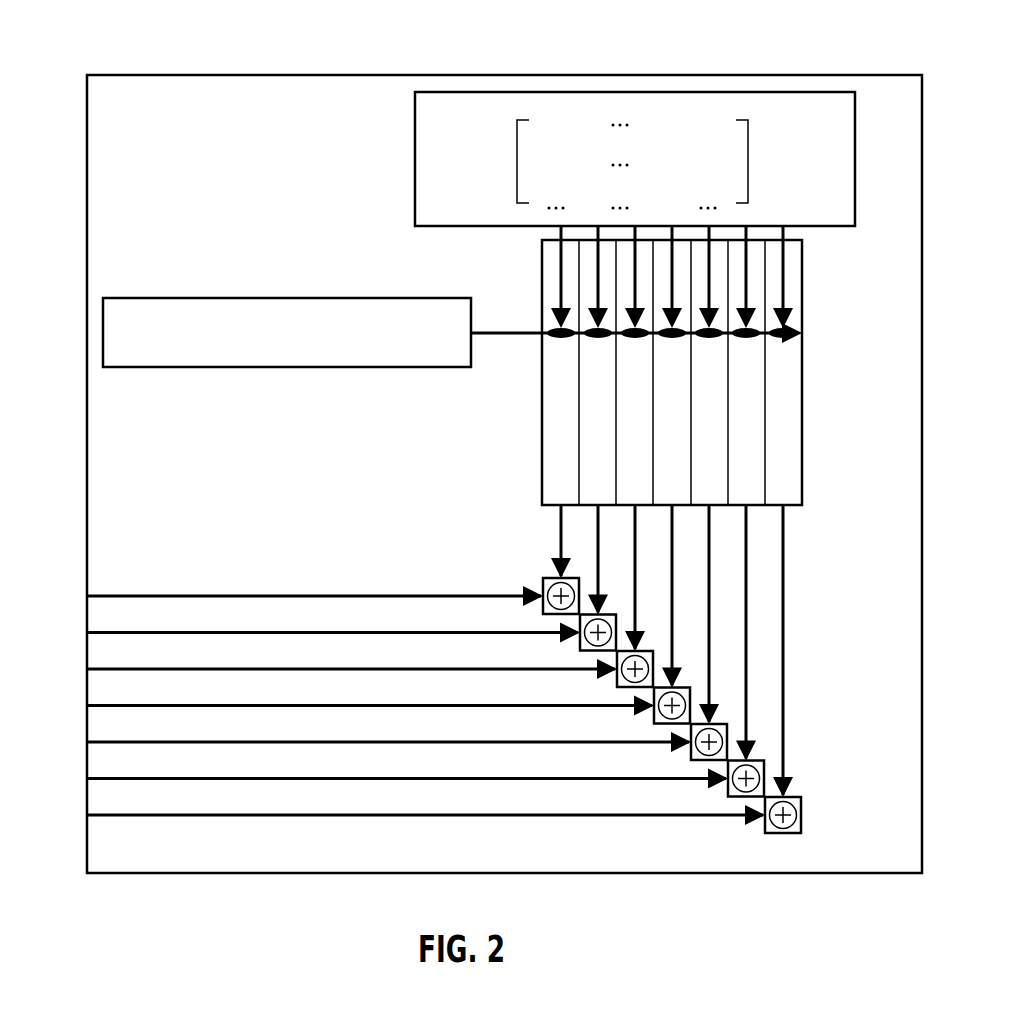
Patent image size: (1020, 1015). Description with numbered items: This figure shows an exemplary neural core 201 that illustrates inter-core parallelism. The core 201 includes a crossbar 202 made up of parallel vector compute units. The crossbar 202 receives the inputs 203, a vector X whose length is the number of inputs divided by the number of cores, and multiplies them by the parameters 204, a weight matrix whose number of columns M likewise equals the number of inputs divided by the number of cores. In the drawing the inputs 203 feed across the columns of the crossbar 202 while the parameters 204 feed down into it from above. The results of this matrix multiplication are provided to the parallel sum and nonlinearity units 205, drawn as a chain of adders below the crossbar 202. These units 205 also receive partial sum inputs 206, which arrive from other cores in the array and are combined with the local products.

The core 201 is at (205, 75).
The crossbar 202 is at (803, 412).
The inputs 203 is at (290, 298).
The parameters 204 is at (415, 162).
The parallel sum and nonlinearity units 205 is at (827, 573).
The partial sum inputs 206 is at (78, 593).